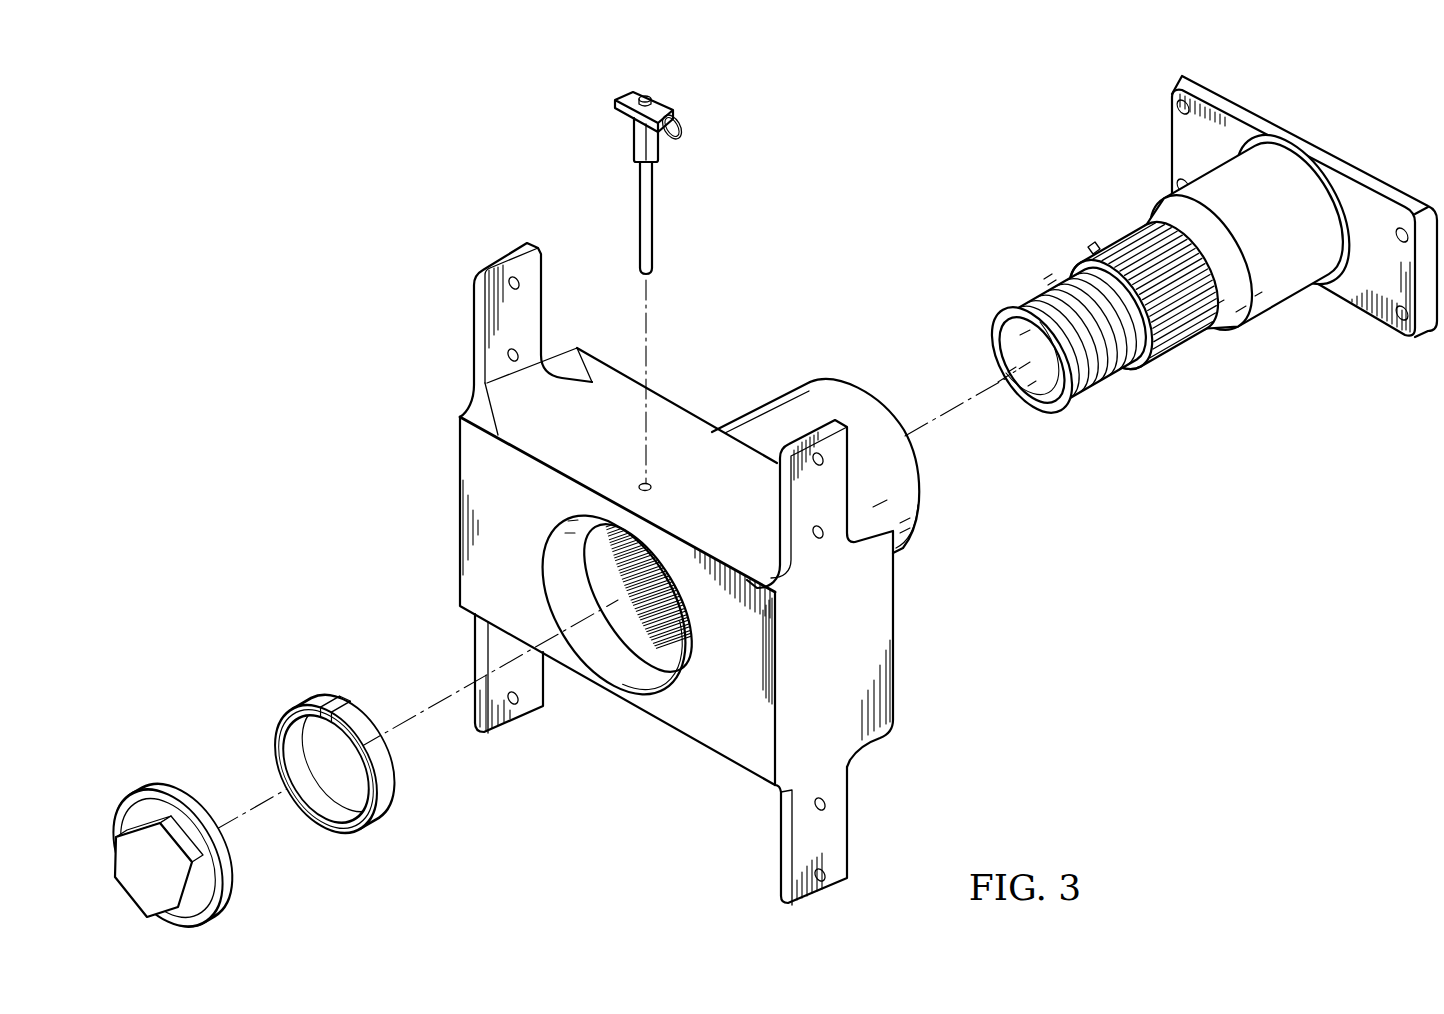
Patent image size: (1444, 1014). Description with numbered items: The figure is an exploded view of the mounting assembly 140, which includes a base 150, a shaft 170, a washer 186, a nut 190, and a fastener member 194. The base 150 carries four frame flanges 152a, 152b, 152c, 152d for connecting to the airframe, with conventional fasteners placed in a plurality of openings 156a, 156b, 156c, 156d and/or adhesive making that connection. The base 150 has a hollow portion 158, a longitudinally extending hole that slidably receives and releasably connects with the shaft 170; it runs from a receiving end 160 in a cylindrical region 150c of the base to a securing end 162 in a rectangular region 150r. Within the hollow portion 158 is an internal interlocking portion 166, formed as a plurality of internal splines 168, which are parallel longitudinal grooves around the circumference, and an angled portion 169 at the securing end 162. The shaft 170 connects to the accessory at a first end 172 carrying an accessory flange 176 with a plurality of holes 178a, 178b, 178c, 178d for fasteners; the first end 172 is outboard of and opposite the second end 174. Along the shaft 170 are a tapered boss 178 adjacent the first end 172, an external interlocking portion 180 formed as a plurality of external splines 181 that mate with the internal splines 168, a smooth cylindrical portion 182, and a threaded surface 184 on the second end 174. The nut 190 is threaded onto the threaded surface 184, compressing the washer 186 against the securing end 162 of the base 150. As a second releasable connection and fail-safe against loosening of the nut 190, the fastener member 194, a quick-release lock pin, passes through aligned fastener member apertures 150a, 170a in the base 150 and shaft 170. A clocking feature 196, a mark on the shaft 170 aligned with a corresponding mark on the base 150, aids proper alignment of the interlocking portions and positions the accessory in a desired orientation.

The mounting assembly 140 is at (470, 63).
The base 150 is at (458, 243).
The fastener member aperture 150a is at (640, 482).
The cylindrical region 150c is at (832, 382).
The rectangular region 150r is at (668, 416).
The frame flange 152a is at (474, 332).
The frame flange 152b is at (852, 444).
The frame flange 152c is at (848, 842).
The frame flange 152d is at (474, 650).
The opening 156a is at (520, 281).
The opening 156b is at (823, 463).
The opening 156c is at (826, 806).
The opening 156d is at (518, 703).
The hollow portion 158 is at (560, 557).
The receiving end 160 is at (783, 395).
The securing end 162 is at (670, 720).
The internal interlocking portion 166 is at (604, 545).
The internal splines 168 is at (660, 556).
The angled portion 169 is at (625, 682).
The shaft 170 is at (1302, 120).
The fastener member aperture 170a is at (1045, 278).
The first end 172 is at (1238, 90).
The second end 174 is at (1015, 395).
The accessory flange 176 is at (1340, 160).
The tapered boss 178 is at (1250, 318).
The hole 178a is at (1176, 103).
The hole 178b is at (1402, 228).
The hole 178c is at (1398, 325).
The hole 178d is at (1176, 182).
The external interlocking portion 180 is at (1165, 388).
The external splines 181 is at (1125, 226).
The cylindrical portion 182 is at (1083, 398).
The threaded surface 184 is at (1020, 300).
The washer 186 is at (320, 700).
The nut 190 is at (142, 797).
The fastener member 194 is at (668, 110).
The clocking feature 196 is at (1085, 248).